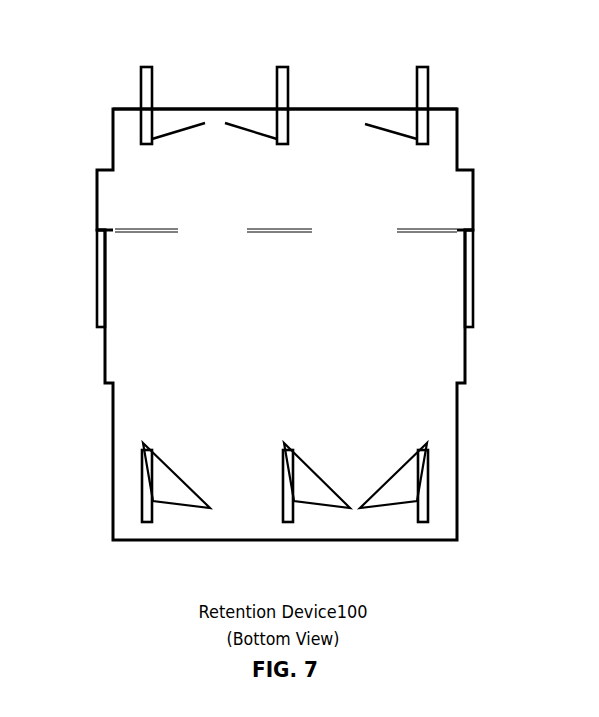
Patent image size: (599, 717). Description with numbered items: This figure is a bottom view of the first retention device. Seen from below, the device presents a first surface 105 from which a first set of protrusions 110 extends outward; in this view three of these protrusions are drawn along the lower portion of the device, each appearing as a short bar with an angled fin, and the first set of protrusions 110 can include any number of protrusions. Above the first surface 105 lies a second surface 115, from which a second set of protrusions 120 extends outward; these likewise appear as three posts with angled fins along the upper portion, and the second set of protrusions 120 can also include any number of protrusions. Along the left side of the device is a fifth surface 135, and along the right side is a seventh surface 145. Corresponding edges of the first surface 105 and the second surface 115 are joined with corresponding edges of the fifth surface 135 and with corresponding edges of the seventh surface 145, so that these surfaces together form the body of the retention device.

The first surface 105 is at (262, 363).
The first set of protrusions 110 is at (150, 525).
The second surface 115 is at (262, 193).
The second set of protrusions 120 is at (422, 66).
The fifth surface 135 is at (93, 283).
The seventh surface 145 is at (472, 283).